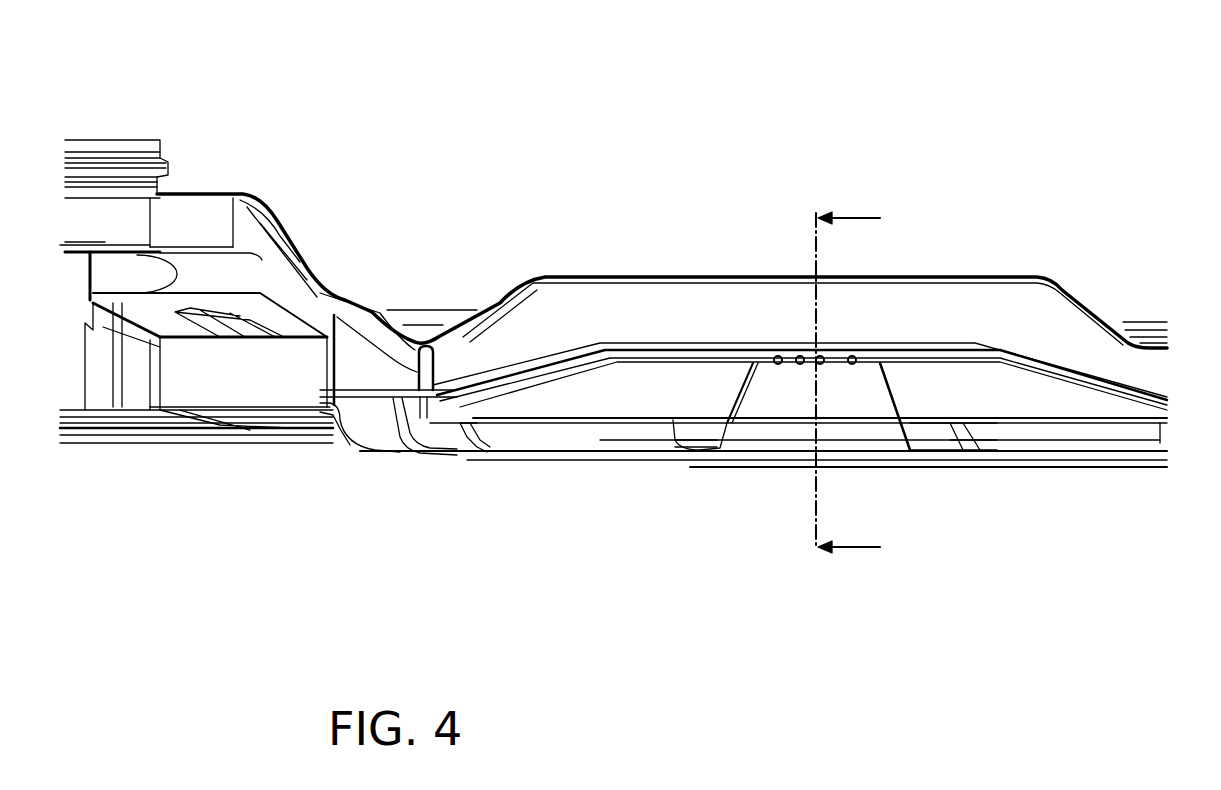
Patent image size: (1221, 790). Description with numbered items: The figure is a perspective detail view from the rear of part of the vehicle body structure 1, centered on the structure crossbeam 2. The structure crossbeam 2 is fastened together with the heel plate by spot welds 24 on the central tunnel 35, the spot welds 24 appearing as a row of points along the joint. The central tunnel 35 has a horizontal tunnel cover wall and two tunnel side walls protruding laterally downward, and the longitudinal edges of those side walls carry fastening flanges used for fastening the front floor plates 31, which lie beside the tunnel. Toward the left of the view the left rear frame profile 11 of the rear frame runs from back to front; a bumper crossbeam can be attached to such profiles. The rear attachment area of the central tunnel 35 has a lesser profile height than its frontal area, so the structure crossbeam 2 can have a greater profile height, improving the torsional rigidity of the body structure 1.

The body structure 1 is at (470, 115).
The structure crossbeam 2 is at (657, 305).
The rear frame profile 11 is at (215, 225).
The spot welds 24 is at (817, 352).
The front floor plates 31 is at (607, 392).
The central tunnel 35 is at (760, 427).